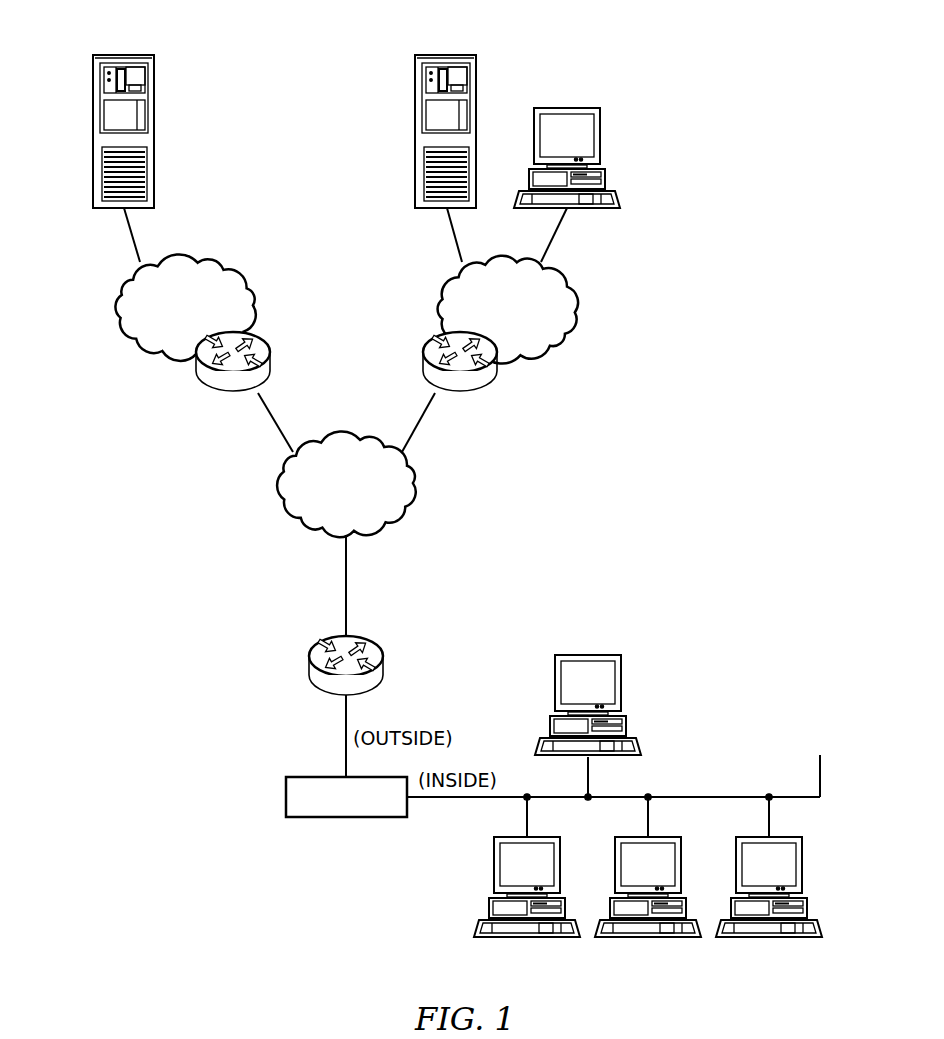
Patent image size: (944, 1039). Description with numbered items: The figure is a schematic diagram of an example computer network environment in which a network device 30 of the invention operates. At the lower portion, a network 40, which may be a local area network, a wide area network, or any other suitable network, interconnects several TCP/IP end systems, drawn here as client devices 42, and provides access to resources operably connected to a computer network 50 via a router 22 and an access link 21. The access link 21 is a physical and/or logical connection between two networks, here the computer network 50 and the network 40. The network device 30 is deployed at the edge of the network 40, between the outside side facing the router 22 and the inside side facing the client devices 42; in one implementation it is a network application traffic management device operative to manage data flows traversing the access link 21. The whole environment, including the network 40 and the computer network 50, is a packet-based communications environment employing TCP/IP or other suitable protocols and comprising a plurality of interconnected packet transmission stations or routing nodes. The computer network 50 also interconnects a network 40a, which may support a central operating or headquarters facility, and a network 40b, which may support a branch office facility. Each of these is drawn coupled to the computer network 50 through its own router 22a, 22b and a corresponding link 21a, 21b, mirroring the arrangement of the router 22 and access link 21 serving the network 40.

The network 40a is at (114, 309).
The network 40b is at (580, 308).
The router of first external network 22a is at (216, 393).
The router of second external network 22b is at (462, 393).
The link from router 22a to network cloud 21a is at (297, 411).
The link from router 22b to network cloud 21b is at (420, 418).
The computer network 50 is at (277, 488).
The access link 21 is at (345, 587).
The router 22 is at (309, 665).
The network device 30 is at (341, 818).
The network 40 is at (821, 777).
The client devices 42 is at (592, 655).